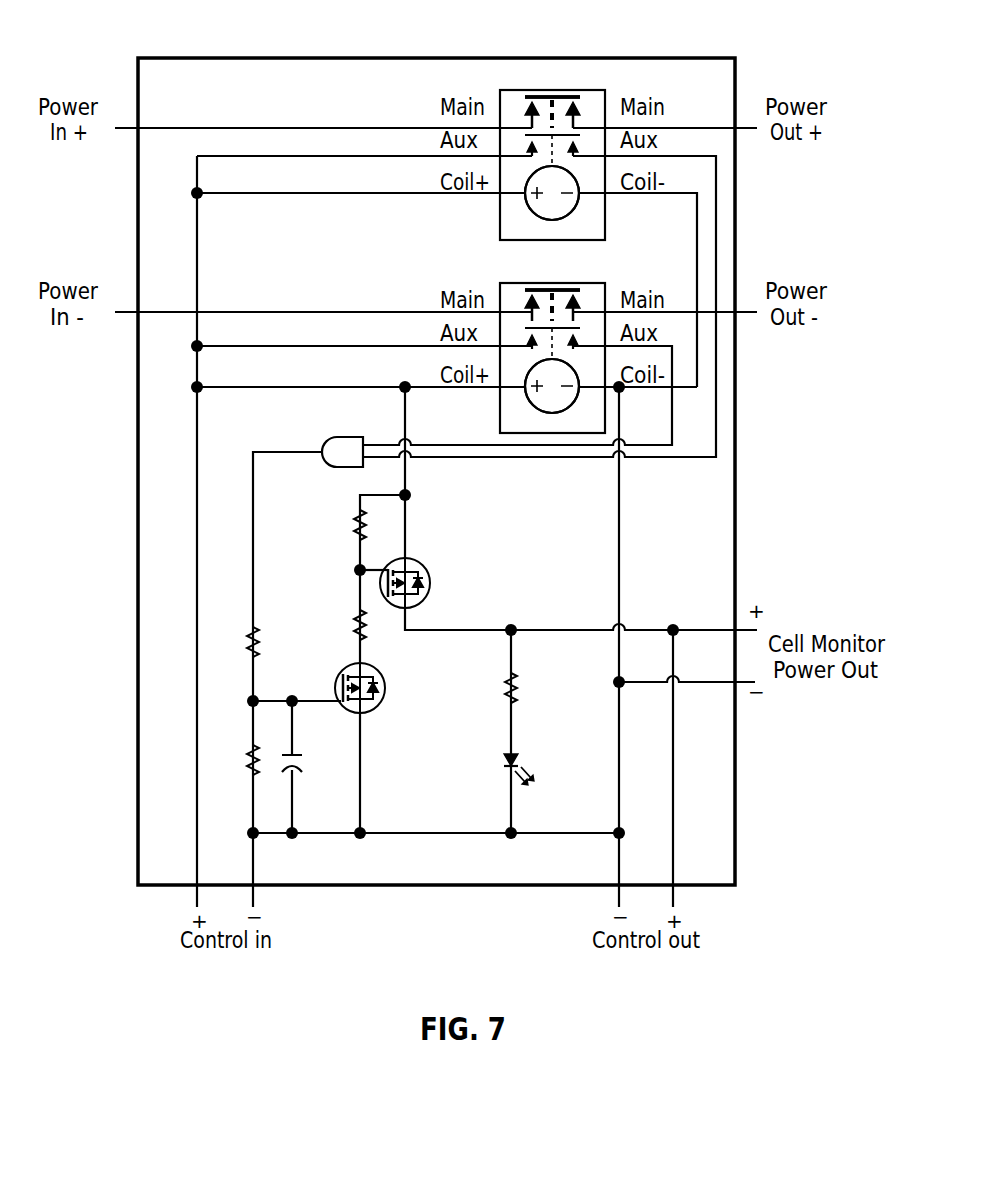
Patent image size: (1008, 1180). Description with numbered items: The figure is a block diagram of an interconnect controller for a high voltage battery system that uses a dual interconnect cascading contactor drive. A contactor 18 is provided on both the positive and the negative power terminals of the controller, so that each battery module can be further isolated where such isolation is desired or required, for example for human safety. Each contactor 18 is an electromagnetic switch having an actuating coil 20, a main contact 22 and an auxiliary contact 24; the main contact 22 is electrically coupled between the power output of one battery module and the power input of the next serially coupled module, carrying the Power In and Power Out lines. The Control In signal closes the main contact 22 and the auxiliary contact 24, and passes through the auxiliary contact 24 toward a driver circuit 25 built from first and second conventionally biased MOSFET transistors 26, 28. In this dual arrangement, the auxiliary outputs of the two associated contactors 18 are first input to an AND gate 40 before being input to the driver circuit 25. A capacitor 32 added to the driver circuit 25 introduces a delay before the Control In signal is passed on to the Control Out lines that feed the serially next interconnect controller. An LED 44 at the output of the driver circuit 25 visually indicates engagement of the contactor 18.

The contactor 18 is at (607, 233).
The actuating coil 20 is at (530, 213).
The main contact 22 is at (572, 97).
The auxiliary contact 24 is at (578, 147).
The driver circuit 25 is at (408, 649).
The first MOSFET transistor 26 is at (377, 710).
The second MOSFET transistor 28 is at (425, 570).
The capacitor 32 is at (313, 760).
The AND gate 40 is at (343, 437).
The LED 44 is at (522, 757).